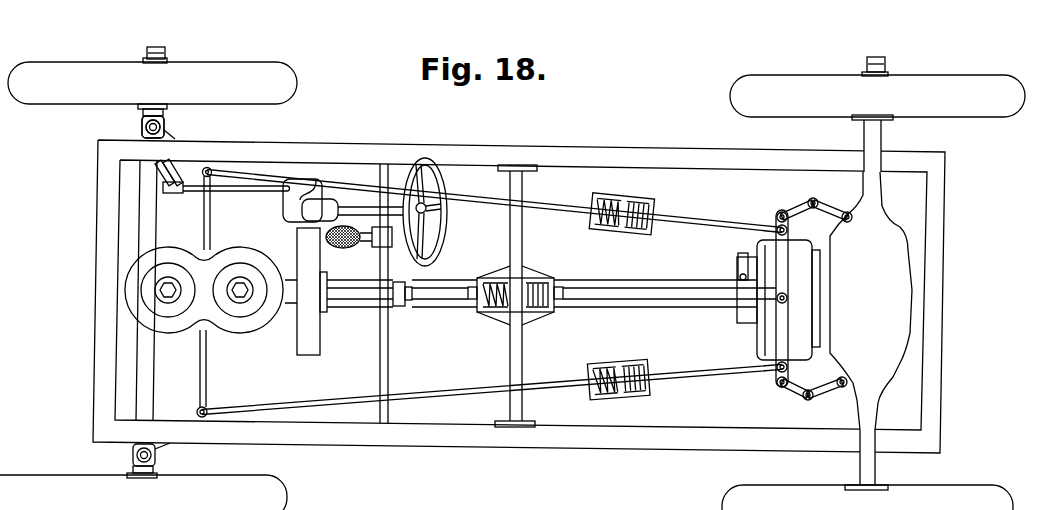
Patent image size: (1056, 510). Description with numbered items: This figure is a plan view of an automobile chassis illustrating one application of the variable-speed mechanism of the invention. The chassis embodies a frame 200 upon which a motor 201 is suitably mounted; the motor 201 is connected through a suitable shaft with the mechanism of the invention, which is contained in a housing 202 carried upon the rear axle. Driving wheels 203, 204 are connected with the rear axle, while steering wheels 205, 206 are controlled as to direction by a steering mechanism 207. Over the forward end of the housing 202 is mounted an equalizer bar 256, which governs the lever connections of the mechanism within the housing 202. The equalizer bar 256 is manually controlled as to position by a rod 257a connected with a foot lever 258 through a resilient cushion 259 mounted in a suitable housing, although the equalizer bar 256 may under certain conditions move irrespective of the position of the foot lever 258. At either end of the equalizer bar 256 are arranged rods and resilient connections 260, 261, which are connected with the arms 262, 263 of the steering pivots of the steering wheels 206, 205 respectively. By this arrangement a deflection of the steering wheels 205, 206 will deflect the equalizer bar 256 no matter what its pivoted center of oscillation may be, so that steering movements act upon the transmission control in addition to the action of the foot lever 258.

The frame 200 is at (551, 158).
The motor 201 is at (240, 326).
The housing 202 is at (893, 270).
The driving wheel 203 is at (757, 100).
The driving wheel 204 is at (744, 490).
The steering wheel 205 is at (282, 87).
The steering wheel 206 is at (274, 497).
The steering mechanism 207 is at (442, 230).
The equalizer bar 256 is at (782, 325).
The rod 257a is at (620, 296).
The foot lever 258 is at (348, 308).
The resilient cushion 259 is at (500, 311).
The rod and resilient connection 260 is at (692, 376).
The rod and resilient connection 261 is at (681, 221).
The arm 262 is at (196, 416).
The arm 263 is at (170, 137).